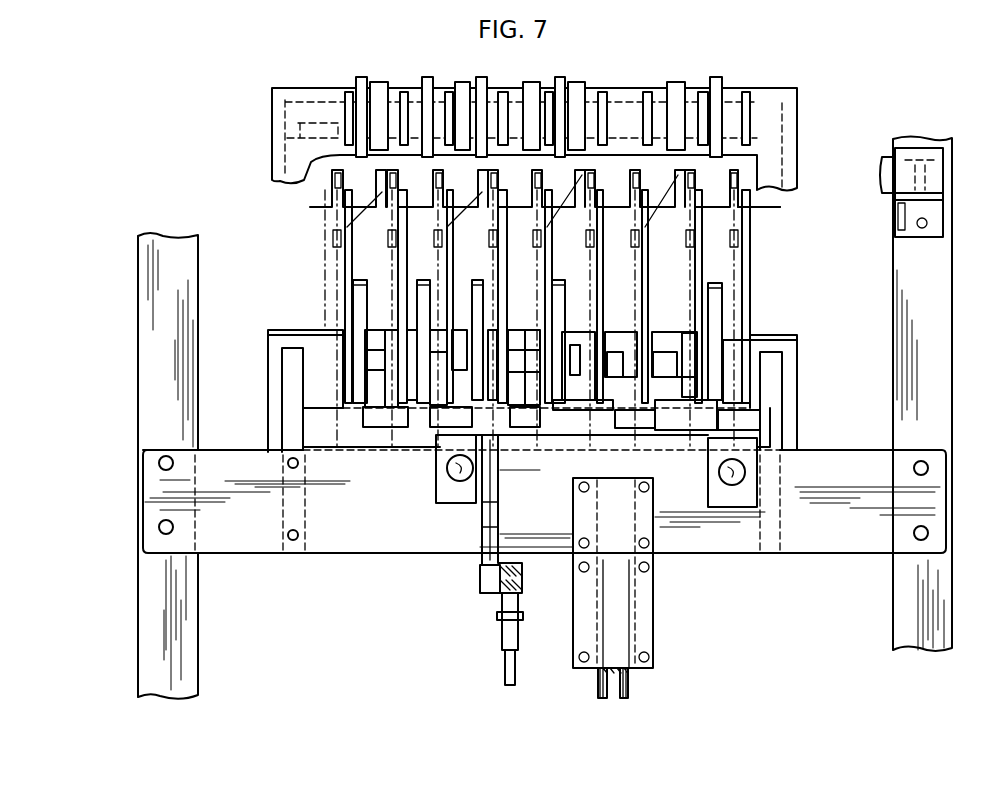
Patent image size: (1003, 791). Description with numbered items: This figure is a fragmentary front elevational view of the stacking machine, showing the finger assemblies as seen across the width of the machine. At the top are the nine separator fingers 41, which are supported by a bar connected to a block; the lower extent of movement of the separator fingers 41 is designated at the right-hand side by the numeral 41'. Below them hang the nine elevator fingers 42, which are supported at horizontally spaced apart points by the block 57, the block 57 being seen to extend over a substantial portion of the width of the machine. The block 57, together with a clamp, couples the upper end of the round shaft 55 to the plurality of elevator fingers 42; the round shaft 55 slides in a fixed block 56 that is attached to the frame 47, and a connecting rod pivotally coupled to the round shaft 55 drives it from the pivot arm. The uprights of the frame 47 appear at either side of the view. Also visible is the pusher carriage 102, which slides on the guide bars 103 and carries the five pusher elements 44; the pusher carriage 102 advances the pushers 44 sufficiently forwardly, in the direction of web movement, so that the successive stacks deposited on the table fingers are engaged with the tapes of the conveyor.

The separator fingers 41 is at (548, 298).
The lower extent of movement of the separator fingers 41' is at (778, 320).
The elevator fingers 42 is at (350, 253).
The pusher elements 44 is at (360, 307).
The frame 47 is at (148, 363).
The round shaft 55 is at (633, 675).
The fixed block 56 is at (655, 598).
The block 57 is at (767, 413).
The pusher carriage 102 is at (675, 447).
The guide bars 103 is at (458, 474).